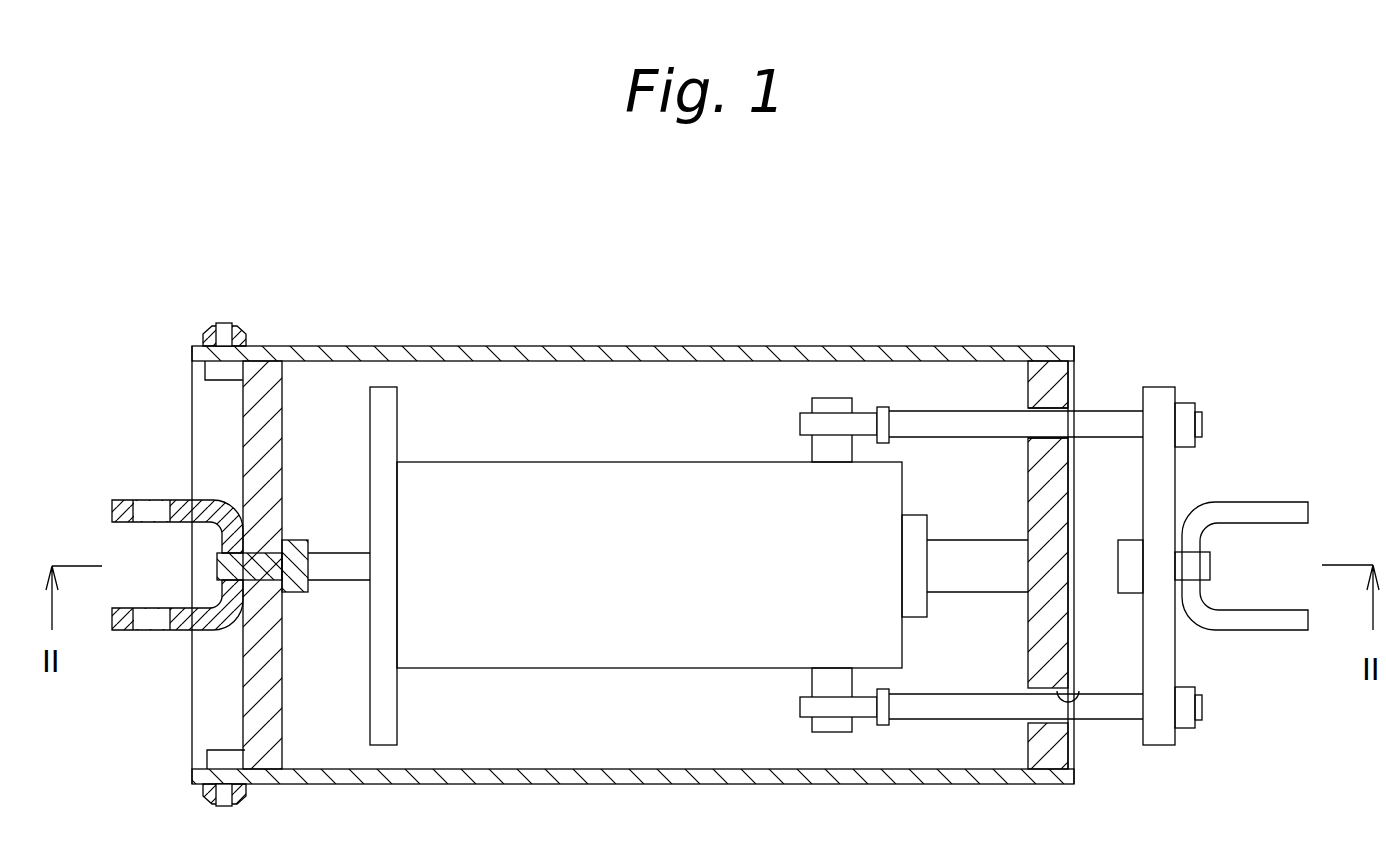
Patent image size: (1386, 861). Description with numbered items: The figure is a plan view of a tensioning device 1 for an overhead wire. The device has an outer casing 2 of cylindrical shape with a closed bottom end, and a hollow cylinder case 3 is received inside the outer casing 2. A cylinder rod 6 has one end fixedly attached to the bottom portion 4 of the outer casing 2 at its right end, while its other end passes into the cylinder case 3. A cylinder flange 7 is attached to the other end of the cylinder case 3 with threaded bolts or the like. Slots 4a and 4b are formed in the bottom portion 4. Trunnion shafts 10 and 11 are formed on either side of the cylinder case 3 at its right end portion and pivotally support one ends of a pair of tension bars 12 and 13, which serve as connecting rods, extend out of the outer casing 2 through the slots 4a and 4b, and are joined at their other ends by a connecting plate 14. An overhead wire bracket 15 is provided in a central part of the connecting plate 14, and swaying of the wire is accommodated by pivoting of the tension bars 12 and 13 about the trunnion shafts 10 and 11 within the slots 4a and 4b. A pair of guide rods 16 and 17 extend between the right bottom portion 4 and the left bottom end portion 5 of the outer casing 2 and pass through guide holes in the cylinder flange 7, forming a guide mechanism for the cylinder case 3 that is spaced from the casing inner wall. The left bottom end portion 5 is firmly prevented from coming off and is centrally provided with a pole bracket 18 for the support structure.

The tensioning device 1 is at (950, 330).
The outer casing 2 is at (613, 353).
The cylinder case 3 is at (597, 468).
The bottom portion 4 is at (1043, 368).
The slot 4a is at (1012, 455).
The slot 4b is at (1062, 708).
The left bottom end portion 5 is at (277, 378).
The cylinder rod 6 is at (972, 584).
The cylinder flange 7 is at (392, 420).
The trunnion shaft 10 is at (818, 447).
The trunnion shaft 11 is at (818, 680).
The tension bar 12 is at (1099, 413).
The tension bar 13 is at (1099, 718).
The connecting plate 14 is at (1168, 670).
The overhead wire bracket 15 is at (1233, 508).
The guide rod 16 is at (338, 572).
The guide rod 17 is at (339, 566).
The pole bracket 18 is at (116, 506).